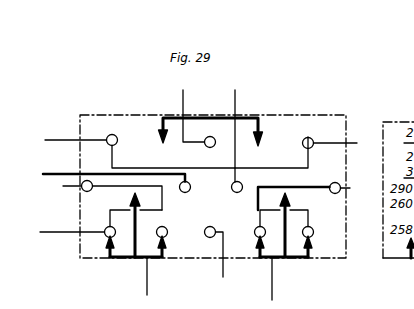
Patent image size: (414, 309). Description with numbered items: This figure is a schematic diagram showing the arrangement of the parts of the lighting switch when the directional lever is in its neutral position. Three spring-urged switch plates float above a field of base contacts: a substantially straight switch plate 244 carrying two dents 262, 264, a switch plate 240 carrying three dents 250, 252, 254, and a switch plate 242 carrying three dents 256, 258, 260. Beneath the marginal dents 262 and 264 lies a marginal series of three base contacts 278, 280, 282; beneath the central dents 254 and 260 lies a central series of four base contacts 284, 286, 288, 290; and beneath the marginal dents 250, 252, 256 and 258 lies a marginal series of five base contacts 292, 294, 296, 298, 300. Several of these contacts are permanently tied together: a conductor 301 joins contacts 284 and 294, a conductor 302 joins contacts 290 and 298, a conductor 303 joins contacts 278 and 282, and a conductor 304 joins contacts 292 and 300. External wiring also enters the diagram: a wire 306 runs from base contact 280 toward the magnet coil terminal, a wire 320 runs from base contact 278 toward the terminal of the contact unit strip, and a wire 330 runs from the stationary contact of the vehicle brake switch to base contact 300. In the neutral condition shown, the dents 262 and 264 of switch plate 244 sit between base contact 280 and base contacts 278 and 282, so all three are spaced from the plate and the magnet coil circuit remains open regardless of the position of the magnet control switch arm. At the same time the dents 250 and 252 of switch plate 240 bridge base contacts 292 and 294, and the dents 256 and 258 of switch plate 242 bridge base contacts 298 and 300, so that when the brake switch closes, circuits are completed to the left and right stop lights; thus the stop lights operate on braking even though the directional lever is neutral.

The base contact 282 is at (113, 134).
The wire 306 is at (184, 101).
The switch plate 244 is at (239, 113).
The dent 262 is at (266, 117).
The base contact 278 is at (312, 137).
The wire 320 is at (355, 137).
The dent 264 is at (160, 132).
The base contact 280 is at (209, 148).
The conductor 303 is at (275, 168).
The conductor 301 is at (313, 185).
The base contact 284 is at (339, 183).
The dent 260 is at (141, 182).
The base contact 290 is at (97, 196).
The conductor 302 is at (132, 201).
The base contact 300 is at (106, 228).
The wire 330 is at (68, 233).
The dent 258 is at (106, 244).
The base contact 288 is at (191, 187).
The base contact 286 is at (232, 190).
The base contact 298 is at (158, 228).
The base contact 294 is at (259, 226).
The base contact 296 is at (212, 238).
The dent 254 is at (300, 205).
The conductor 304 is at (298, 211).
The base contact 292 is at (313, 232).
The switch plate 242 is at (123, 258).
The dent 256 is at (162, 258).
The dent 252 is at (258, 248).
The switch plate 240 is at (297, 258).
The dent 250 is at (314, 256).